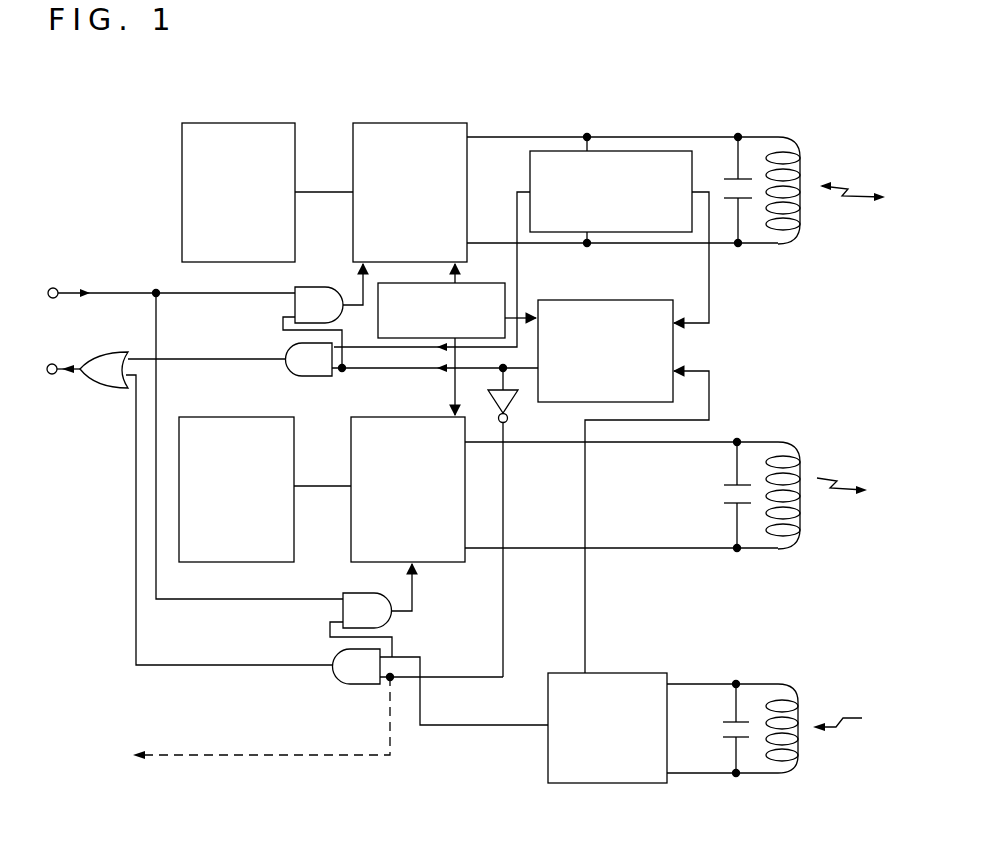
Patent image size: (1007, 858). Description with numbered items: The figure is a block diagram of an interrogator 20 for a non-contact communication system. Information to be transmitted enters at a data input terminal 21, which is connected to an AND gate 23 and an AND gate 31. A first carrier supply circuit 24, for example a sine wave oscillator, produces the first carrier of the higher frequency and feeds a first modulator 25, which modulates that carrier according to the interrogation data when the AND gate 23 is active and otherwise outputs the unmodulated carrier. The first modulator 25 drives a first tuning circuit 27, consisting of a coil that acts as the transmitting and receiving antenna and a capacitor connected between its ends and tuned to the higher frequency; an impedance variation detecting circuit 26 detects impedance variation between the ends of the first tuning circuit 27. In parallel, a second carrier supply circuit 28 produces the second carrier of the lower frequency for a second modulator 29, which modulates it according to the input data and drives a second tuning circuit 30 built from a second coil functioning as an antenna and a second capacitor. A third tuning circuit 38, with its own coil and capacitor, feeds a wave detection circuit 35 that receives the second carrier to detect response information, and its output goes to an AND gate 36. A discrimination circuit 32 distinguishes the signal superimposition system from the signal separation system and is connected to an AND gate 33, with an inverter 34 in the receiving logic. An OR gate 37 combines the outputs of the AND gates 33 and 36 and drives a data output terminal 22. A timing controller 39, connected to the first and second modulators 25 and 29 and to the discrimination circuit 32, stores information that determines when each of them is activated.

The interrogator 20 is at (611, 85).
The data input terminal 21 is at (57, 286).
The data output terminal 22 is at (56, 376).
The AND gate 23 is at (312, 290).
The first carrier supply circuit 24 is at (256, 122).
The first modulator 25 is at (420, 122).
The impedance variation detecting circuit 26 is at (530, 175).
The first tuning circuit 27 is at (764, 150).
The second carrier supply circuit 28 is at (240, 416).
The second modulator 29 is at (400, 417).
The second tuning circuit 30 is at (767, 455).
The AND gate 31 is at (348, 597).
The discrimination circuit 32 is at (597, 299).
The AND gate 33 is at (314, 372).
The inverter 34 is at (510, 402).
The wave detection circuit 35 is at (607, 678).
The AND gate 36 is at (350, 677).
The OR gate 37 is at (101, 351).
The third tuning circuit 38 is at (757, 705).
The timing controller 39 is at (483, 283).